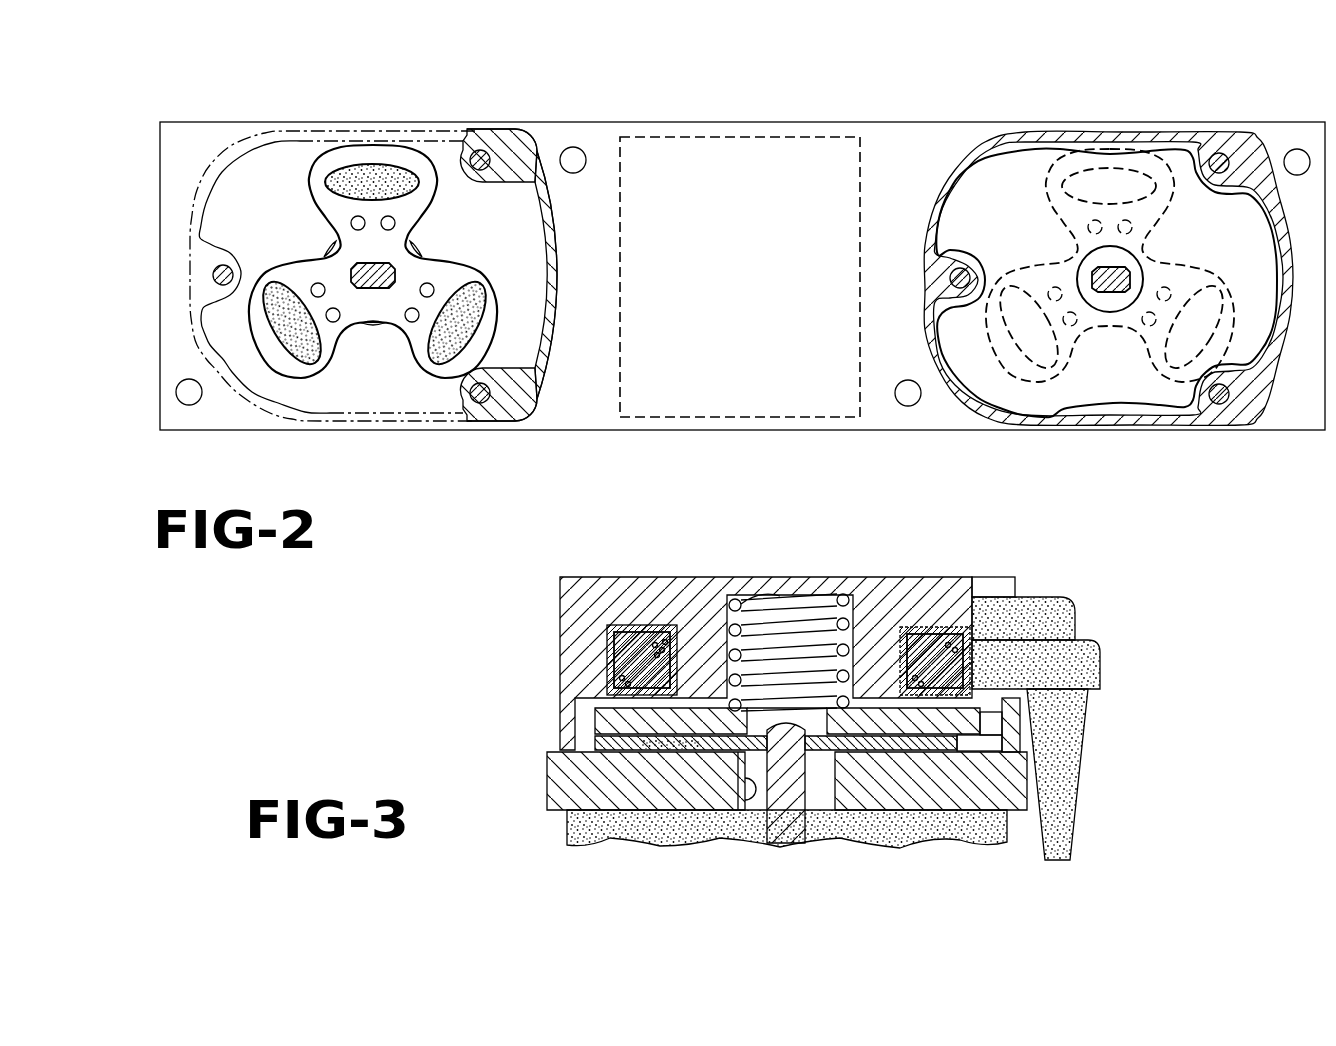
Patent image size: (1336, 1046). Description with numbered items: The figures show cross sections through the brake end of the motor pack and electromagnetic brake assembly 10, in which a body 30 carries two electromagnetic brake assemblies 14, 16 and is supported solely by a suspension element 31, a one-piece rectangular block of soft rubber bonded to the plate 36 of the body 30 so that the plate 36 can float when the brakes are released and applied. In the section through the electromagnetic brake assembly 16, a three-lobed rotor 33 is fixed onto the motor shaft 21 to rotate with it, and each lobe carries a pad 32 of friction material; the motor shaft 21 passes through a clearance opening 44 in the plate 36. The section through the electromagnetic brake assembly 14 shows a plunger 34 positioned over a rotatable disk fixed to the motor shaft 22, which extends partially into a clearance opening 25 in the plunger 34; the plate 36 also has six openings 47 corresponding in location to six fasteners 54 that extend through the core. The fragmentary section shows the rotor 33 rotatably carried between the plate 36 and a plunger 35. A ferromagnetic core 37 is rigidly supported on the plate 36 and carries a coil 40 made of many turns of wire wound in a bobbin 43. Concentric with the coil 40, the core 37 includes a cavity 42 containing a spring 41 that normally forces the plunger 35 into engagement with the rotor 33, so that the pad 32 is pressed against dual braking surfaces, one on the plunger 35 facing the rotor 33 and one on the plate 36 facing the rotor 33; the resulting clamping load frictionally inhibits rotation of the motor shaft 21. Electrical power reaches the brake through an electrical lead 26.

In FIG. 2, the motor pack and electromagnetic brake assembly 10 is at (814, 85).
In FIG. 3, the motor pack and electromagnetic brake assembly 10 is at (1118, 590).
In FIG. 2, the electromagnetic brake assembly 14 is at (1268, 148).
In FIG. 2, the electromagnetic brake assembly 16 is at (546, 130).
In FIG. 3, the electromagnetic brake assembly 16 is at (862, 572).
In FIG. 2, the motor shaft 21 is at (380, 272).
In FIG. 3, the motor shaft 21 is at (790, 822).
In FIG. 2, the motor shaft 22 is at (1117, 275).
In FIG. 2, the clearance opening 25 is at (1093, 262).
In FIG. 3, the electrical lead 26 is at (1062, 818).
In FIG. 2, the body 30 is at (722, 115).
In FIG. 3, the body 30 is at (538, 727).
In FIG. 2, the suspension element 31 is at (872, 165).
In FIG. 3, the suspension element 31 is at (590, 820).
In FIG. 2, the pad 32 is at (386, 180).
In FIG. 3, the pad 32 is at (655, 752).
In FIG. 2, the rotor 33 is at (320, 152).
In FIG. 3, the rotor 33 is at (588, 738).
In FIG. 2, the plunger 34 is at (975, 158).
In FIG. 3, the plunger 35 is at (592, 718).
In FIG. 2, the plate 36 is at (606, 128).
In FIG. 3, the plate 36 is at (545, 776).
In FIG. 3, the ferromagnetic core 37 is at (583, 608).
In FIG. 3, the coil 40 is at (628, 640).
In FIG. 3, the spring 41 is at (805, 628).
In FIG. 3, the cavity 42 is at (737, 604).
In FIG. 3, the bobbin 43 is at (666, 645).
In FIG. 3, the clearance opening 44 is at (745, 792).
In FIG. 2, the openings 47 is at (213, 273).
In FIG. 2, the fasteners 54 is at (478, 152).